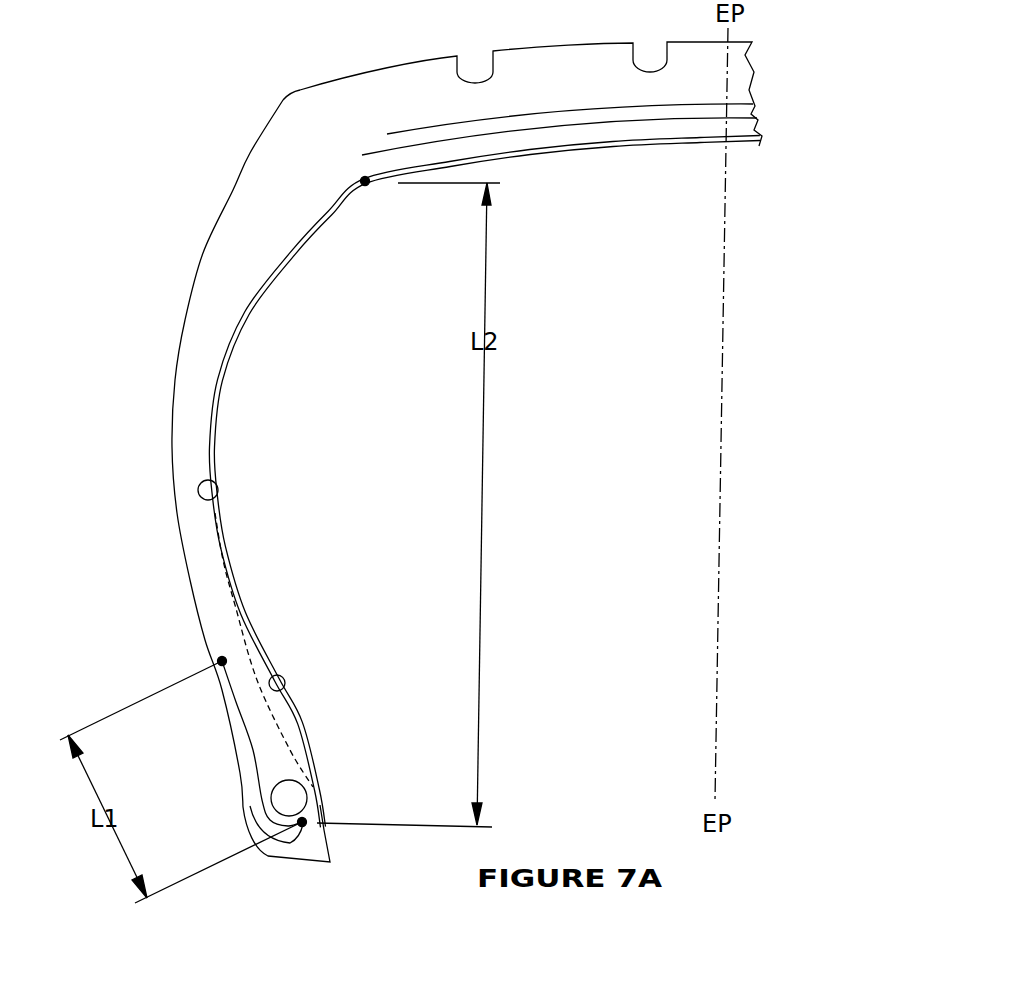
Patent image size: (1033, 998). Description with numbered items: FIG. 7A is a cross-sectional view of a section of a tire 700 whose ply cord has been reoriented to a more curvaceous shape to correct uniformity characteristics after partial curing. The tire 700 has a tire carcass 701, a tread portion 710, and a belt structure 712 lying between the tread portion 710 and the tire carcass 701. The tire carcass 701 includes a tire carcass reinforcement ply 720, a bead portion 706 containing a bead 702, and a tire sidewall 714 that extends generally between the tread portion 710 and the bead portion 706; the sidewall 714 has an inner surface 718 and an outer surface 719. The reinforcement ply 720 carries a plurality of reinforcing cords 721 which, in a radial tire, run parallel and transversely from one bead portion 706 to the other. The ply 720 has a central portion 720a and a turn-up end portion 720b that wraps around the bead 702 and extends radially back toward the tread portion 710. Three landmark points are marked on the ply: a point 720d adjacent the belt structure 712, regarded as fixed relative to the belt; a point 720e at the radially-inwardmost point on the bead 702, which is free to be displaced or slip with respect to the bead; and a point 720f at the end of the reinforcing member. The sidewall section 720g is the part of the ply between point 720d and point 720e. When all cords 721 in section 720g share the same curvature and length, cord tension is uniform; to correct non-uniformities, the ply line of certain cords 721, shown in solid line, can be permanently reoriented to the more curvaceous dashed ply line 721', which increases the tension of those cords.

The tire 700 is at (120, 168).
The tire carcass 701 is at (233, 418).
The bead 702 is at (282, 800).
The bead portion 706 is at (318, 842).
The tread portion 710 is at (533, 45).
The belt structure 712 is at (742, 102).
The tire sidewall 714 is at (200, 355).
The inner surface 718 is at (252, 288).
The outer surface 719 is at (203, 253).
The tire carcass reinforcement ply 720 is at (217, 510).
The central portion 720a is at (628, 140).
The end portion 720b is at (233, 702).
The point adjacent the belt structure 720d is at (366, 182).
The radially-inwardmost point on the bead 720e is at (303, 828).
The end point of the carcass reinforcing member 720f is at (222, 660).
The sidewall section of the carcass reinforcing member 720g is at (208, 460).
The reinforcing cord 721 is at (316, 680).
The reoriented reinforcing cord ply line 721' is at (270, 650).